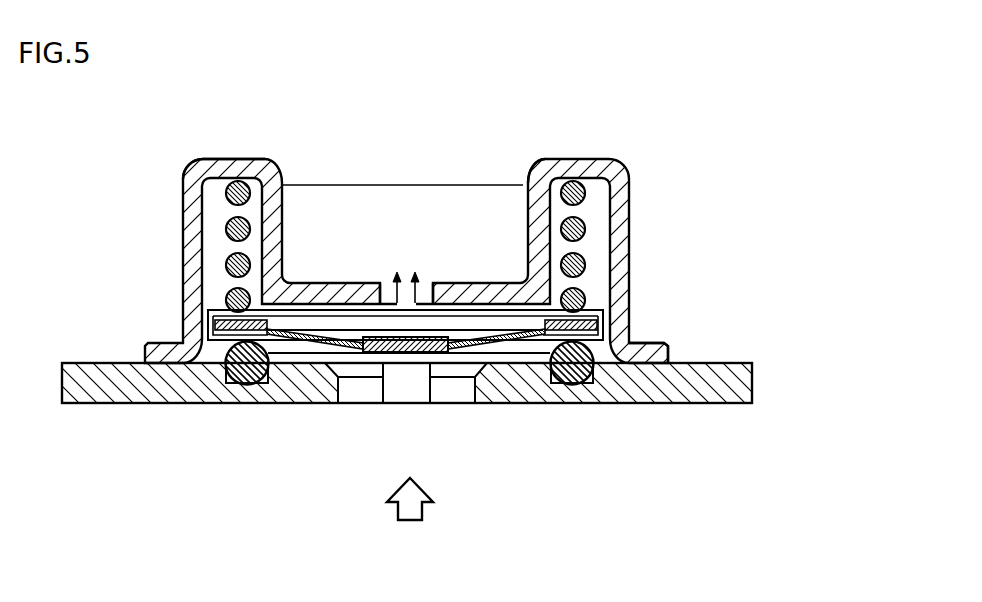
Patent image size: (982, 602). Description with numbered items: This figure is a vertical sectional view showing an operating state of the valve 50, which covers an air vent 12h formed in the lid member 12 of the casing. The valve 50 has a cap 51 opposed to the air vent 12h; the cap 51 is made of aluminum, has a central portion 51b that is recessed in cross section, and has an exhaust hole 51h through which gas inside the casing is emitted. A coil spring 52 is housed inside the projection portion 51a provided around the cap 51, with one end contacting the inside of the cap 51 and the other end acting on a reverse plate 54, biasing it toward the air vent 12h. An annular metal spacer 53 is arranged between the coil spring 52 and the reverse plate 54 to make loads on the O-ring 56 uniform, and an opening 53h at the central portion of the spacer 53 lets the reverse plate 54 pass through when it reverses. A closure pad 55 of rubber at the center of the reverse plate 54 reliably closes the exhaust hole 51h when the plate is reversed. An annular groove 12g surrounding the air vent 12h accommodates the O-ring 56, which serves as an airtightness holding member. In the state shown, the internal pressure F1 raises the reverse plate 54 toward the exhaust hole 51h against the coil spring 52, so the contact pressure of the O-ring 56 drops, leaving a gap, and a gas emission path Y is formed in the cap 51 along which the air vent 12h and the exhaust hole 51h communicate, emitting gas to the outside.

The valve 50 is at (634, 152).
The cap 51 is at (192, 248).
The projection portion 51a is at (238, 170).
The central portion 51b is at (522, 206).
The exhaust hole 51h is at (387, 283).
The coil spring 52 is at (582, 226).
The spacer 53 is at (208, 320).
The opening 53h is at (300, 322).
The reverse plate 54 is at (505, 350).
The closure pad 55 is at (375, 349).
The O-ring 56 is at (247, 386).
The lid member 12 is at (700, 386).
The air vent 12h is at (452, 388).
The annular groove 12g is at (574, 381).
The gas emission path Y is at (427, 390).
The internal pressure F1 is at (410, 517).